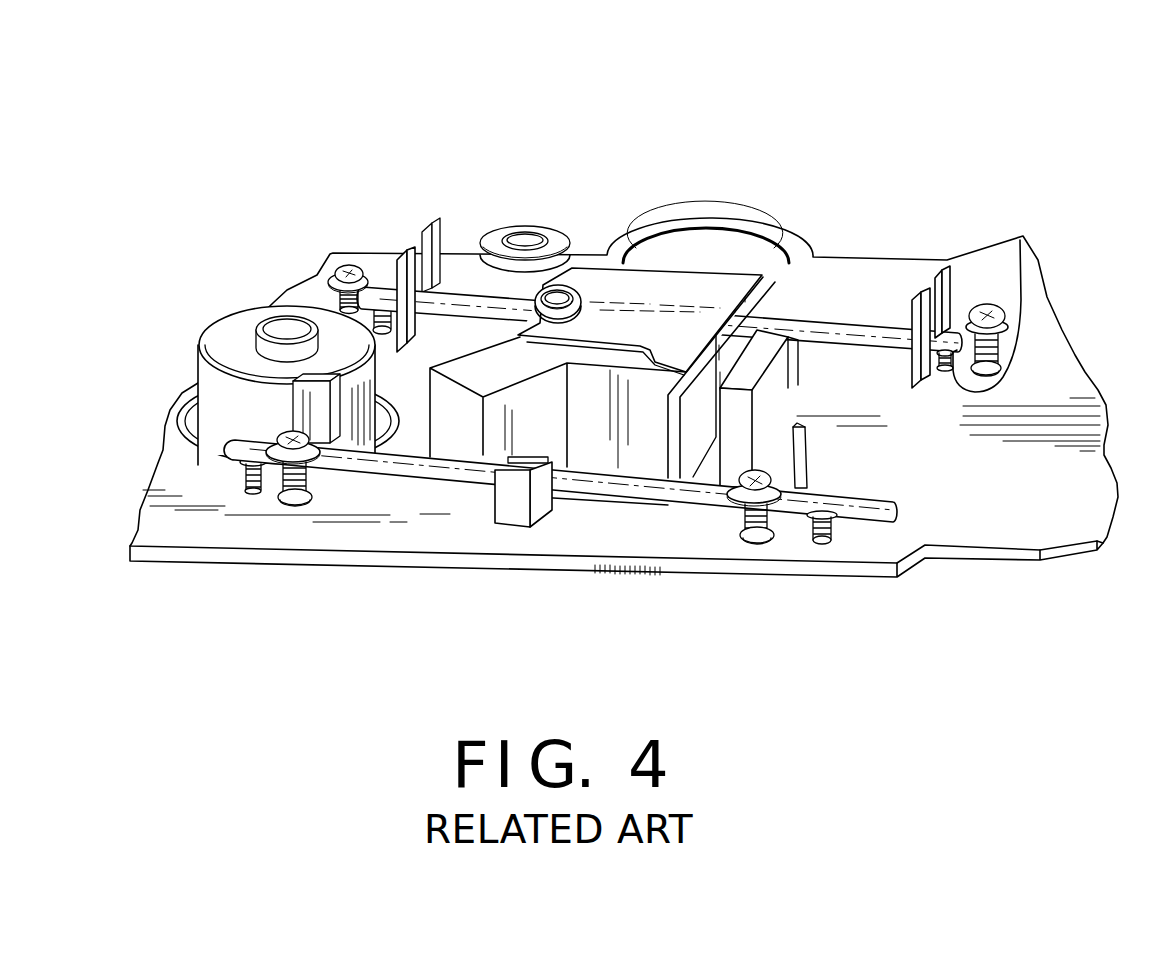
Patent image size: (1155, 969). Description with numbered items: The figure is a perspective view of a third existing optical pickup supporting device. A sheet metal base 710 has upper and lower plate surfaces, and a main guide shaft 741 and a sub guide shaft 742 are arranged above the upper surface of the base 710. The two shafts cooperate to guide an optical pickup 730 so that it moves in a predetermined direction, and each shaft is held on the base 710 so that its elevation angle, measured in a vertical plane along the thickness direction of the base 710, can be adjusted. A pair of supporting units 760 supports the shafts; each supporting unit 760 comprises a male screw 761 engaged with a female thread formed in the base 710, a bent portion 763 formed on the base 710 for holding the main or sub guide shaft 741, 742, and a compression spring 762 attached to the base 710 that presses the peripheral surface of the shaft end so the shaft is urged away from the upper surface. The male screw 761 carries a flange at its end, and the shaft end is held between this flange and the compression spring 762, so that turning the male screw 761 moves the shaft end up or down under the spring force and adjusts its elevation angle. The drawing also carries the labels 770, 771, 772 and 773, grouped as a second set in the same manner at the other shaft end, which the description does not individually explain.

The sheet metal base 710 is at (1055, 360).
The optical pickup 730 is at (694, 292).
The main guide shaft 741 is at (830, 318).
The sub guide shaft 742 is at (885, 500).
The supporting unit 760 is at (1093, 150).
The male screw 761 is at (980, 305).
The compression spring 762 is at (1022, 237).
The bent portion 763 is at (938, 275).
The second shaft holder assembly 770 is at (897, 648).
The fixing screw of second shaft holder 771 is at (745, 545).
The adjusting screw of second shaft holder 772 is at (826, 546).
The spring plate of second shaft holder 773 is at (805, 446).